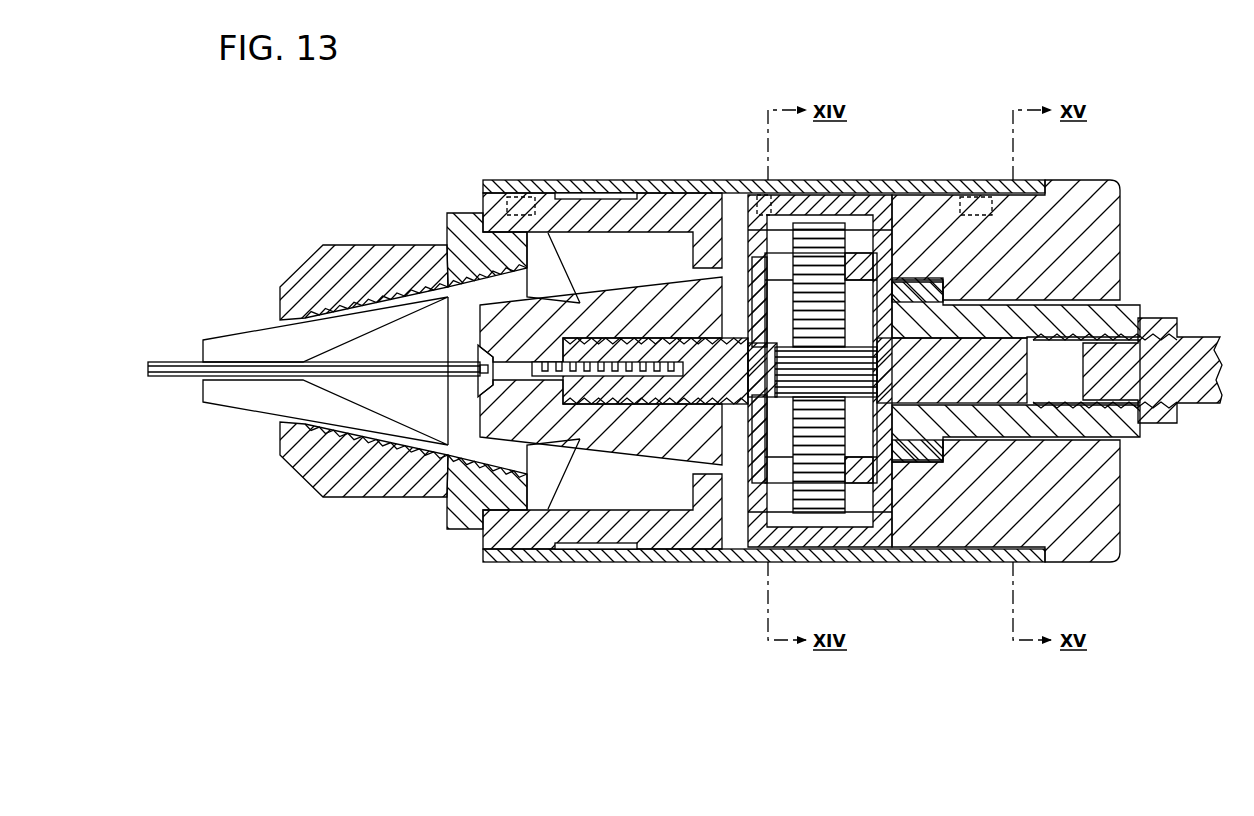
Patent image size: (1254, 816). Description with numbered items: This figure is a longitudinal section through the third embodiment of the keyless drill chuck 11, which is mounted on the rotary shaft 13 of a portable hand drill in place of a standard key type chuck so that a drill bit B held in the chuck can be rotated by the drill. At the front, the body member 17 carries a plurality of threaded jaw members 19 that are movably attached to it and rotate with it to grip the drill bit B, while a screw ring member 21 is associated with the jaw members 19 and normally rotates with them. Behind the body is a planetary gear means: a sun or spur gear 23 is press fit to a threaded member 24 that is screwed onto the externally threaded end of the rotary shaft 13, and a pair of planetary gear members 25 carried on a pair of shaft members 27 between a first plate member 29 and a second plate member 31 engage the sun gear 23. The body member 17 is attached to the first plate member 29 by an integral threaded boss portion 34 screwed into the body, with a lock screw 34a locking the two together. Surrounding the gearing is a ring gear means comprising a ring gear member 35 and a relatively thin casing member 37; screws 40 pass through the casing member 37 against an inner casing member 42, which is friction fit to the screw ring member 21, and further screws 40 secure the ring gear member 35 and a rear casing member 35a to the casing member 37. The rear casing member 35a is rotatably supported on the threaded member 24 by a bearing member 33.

The keyless drill chuck 11 is at (265, 143).
The rotary shaft 13 is at (1200, 398).
The body member 17 is at (358, 482).
The threaded jaw members 19 is at (250, 338).
The screw ring member 21 is at (452, 240).
The sun gear 23 is at (855, 392).
The threaded member 24 is at (1128, 440).
The planetary gear members 25 is at (830, 228).
The shaft members 27 is at (860, 278).
The first plate member 29 is at (735, 440).
The second plate member 31 is at (900, 278).
The bearing member 33 is at (1100, 302).
The threaded boss portion 34 is at (655, 450).
The lock screw 34a is at (480, 394).
The ring gear member 35 is at (812, 222).
The rear casing member 35a is at (1110, 214).
The casing member 37 is at (630, 195).
The screws 40 is at (520, 195).
The inner casing member 42 is at (563, 197).
The drill bit B is at (173, 378).